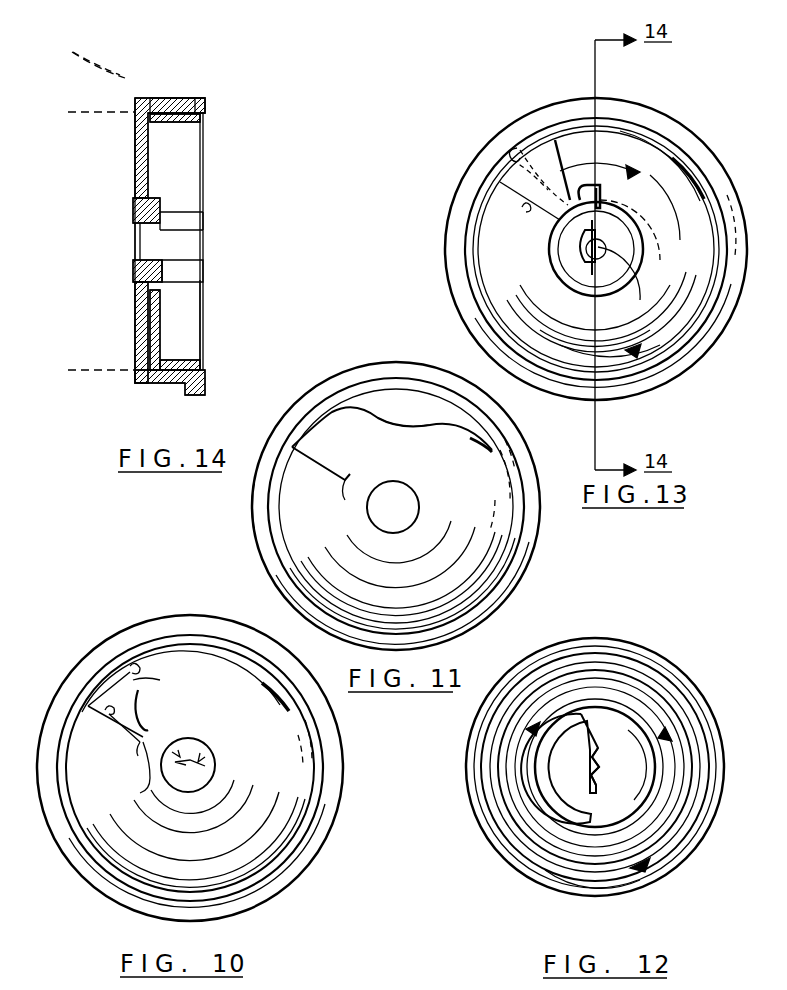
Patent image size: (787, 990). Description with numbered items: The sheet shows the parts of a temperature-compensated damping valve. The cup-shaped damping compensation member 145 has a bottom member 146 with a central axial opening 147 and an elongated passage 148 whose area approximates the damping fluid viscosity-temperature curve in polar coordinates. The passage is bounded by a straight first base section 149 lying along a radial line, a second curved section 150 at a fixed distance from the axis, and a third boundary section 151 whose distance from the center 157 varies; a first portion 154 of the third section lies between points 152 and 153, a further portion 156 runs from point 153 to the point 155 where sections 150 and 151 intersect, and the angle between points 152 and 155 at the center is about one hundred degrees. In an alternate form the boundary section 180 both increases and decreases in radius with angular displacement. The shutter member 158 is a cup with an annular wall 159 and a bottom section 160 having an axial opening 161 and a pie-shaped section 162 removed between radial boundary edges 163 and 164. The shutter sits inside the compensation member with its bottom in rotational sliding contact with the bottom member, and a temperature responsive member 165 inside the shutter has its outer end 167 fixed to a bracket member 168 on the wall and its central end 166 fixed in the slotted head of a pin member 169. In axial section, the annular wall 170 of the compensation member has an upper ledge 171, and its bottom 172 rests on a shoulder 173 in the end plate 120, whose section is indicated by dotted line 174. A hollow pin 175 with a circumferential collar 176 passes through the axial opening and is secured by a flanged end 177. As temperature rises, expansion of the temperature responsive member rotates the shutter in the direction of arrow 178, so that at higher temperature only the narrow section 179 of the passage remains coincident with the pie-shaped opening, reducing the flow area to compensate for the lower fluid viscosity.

In FIG. 14, the end plate 120 is at (100, 60).
In FIG. 14, the cup-shaped damping compensation member 145 is at (152, 98).
In FIG. 13, the cup-shaped damping compensation member 145 is at (660, 100).
In FIG. 10, the cup-shaped damping compensation member 145 is at (56, 690).
In FIG. 14, the bottom member 146 is at (140, 325).
In FIG. 13, the bottom member 146 is at (636, 193).
In FIG. 10, the bottom member 146 is at (222, 826).
In FIG. 10, the axial opening 147 is at (205, 768).
In FIG. 13, the passage 148 is at (515, 195).
In FIG. 11, the passage 148 is at (335, 455).
In FIG. 10, the passage 148 is at (118, 700).
In FIG. 13, the first base section 149 is at (526, 212).
In FIG. 10, the first base section 149 is at (108, 715).
In FIG. 10, the second curved section 150 is at (135, 665).
In FIG. 13, the third boundary section 151 is at (548, 180).
In FIG. 11, the third boundary section 151 is at (398, 430).
In FIG. 10, the third boundary section 151 is at (140, 690).
In FIG. 10, the point 152 is at (143, 745).
In FIG. 11, the point 153 is at (346, 484).
In FIG. 10, the point 153 is at (150, 728).
In FIG. 10, the first portion of third boundary section 154 is at (145, 792).
In FIG. 13, the point 155 is at (716, 195).
In FIG. 11, the point 155 is at (488, 455).
In FIG. 10, the point 155 is at (287, 712).
In FIG. 10, the portion of boundary section 156 is at (222, 658).
In FIG. 11, the center 157 is at (393, 505).
In FIG. 10, the center 157 is at (186, 772).
In FIG. 14, the shutter member 158 is at (185, 360).
In FIG. 13, the shutter member 158 is at (510, 148).
In FIG. 12, the shutter member 158 is at (540, 655).
In FIG. 14, the annular wall 159 is at (201, 362).
In FIG. 12, the annular wall 159 is at (670, 675).
In FIG. 14, the bottom section 160 is at (160, 310).
In FIG. 13, the bottom section 160 is at (516, 266).
In FIG. 12, the bottom section 160 is at (585, 668).
In FIG. 12, the axial opening 161 is at (582, 772).
In FIG. 12, the pie-shaped section 162 is at (595, 767).
In FIG. 13, the radial boundary edge 163 is at (557, 152).
In FIG. 12, the radial boundary edge 163 is at (592, 716).
In FIG. 13, the radial boundary edge 164 is at (700, 287).
In FIG. 12, the radial boundary edge 164 is at (670, 820).
In FIG. 12, the temperature responsive member 165 is at (685, 720).
In FIG. 13, the central end 166 is at (580, 288).
In FIG. 12, the central end 166 is at (599, 772).
In FIG. 13, the outer end 167 is at (582, 356).
In FIG. 12, the outer end 167 is at (620, 876).
In FIG. 13, the bracket member 168 is at (636, 358).
In FIG. 12, the bracket member 168 is at (640, 872).
In FIG. 13, the pin member 169 is at (565, 270).
In FIG. 14, the annular wall 170 is at (172, 98).
In FIG. 14, the upper ledge 171 is at (196, 98).
In FIG. 14, the bottom 172 is at (138, 373).
In FIG. 14, the shoulder 173 is at (137, 100).
In FIG. 14, the dotted line 174 is at (122, 62).
In FIG. 14, the hollow pin 175 is at (196, 270).
In FIG. 14, the circumferential collar 176 is at (155, 205).
In FIG. 14, the flanged end 177 is at (136, 278).
In FIG. 13, the arrow 178 is at (598, 170).
In FIG. 13, the narrow section 179 is at (622, 130).
In FIG. 10, the narrow section 179 is at (210, 652).
In FIG. 11, the boundary line section 180 is at (383, 428).